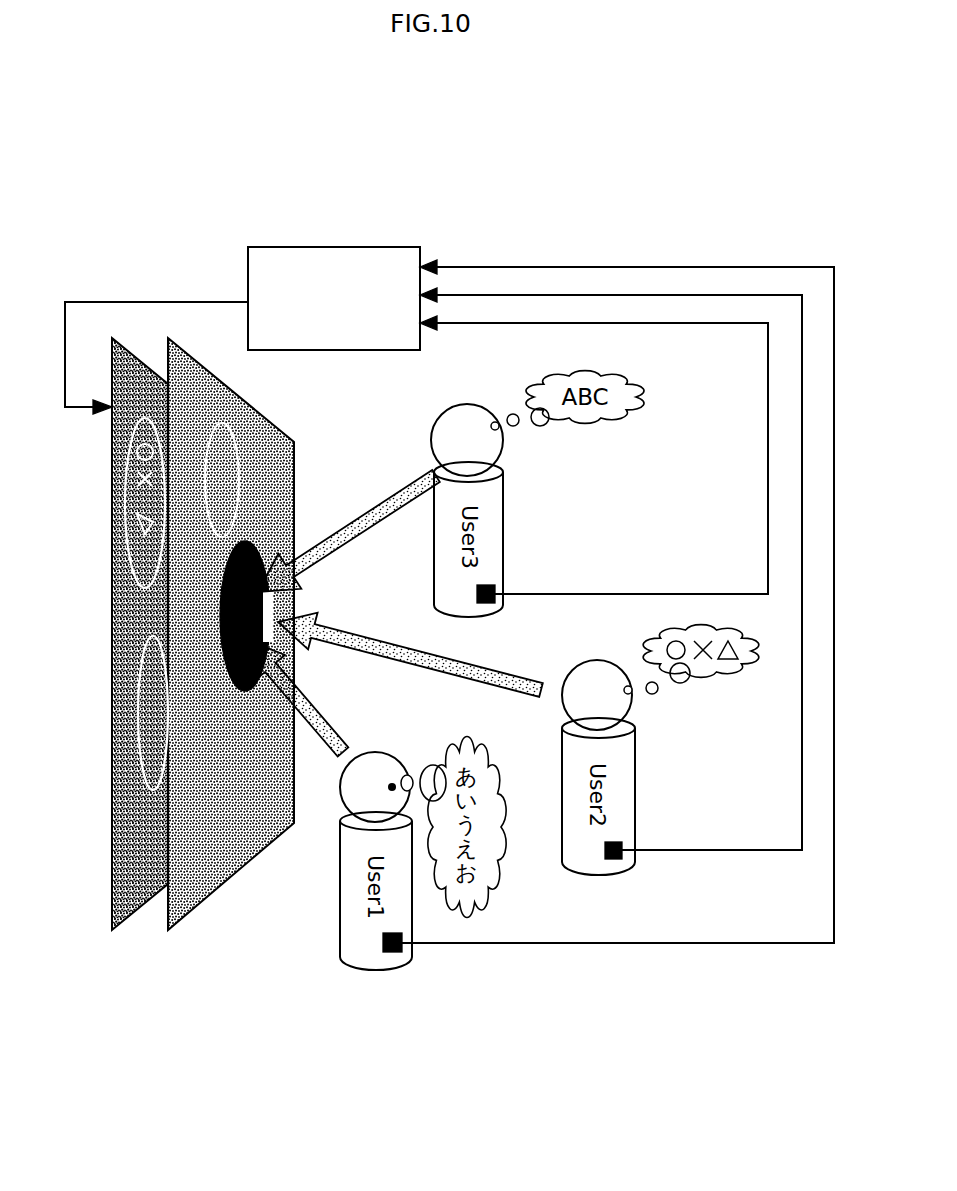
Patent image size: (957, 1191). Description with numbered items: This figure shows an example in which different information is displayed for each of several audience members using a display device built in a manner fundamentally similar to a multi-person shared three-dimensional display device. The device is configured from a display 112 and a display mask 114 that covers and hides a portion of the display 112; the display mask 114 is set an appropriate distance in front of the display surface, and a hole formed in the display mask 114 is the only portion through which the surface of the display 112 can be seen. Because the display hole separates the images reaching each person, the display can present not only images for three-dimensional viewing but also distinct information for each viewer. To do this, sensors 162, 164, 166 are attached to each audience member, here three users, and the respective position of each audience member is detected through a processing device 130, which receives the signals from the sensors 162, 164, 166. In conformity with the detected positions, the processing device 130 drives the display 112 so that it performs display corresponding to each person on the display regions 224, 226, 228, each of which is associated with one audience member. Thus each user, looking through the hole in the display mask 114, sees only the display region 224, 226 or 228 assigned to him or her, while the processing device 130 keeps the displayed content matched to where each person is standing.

The display 112 is at (135, 913).
The display mask 114 is at (222, 877).
The processing device 130 is at (380, 352).
The sensor 162 is at (400, 952).
The sensor 164 is at (622, 842).
The sensor 166 is at (496, 585).
The display region 224 is at (127, 513).
The display region 226 is at (227, 440).
The display region 228 is at (138, 683).